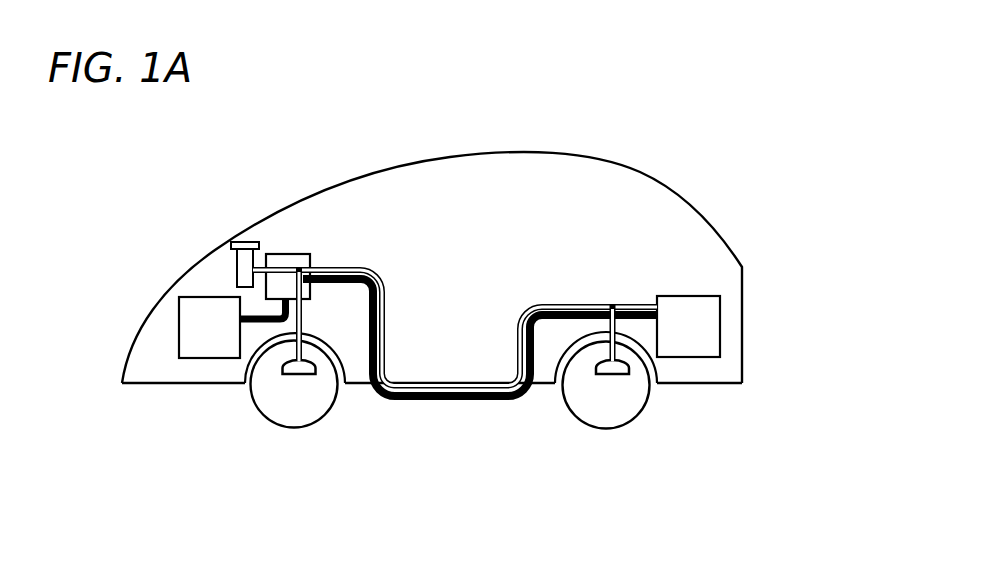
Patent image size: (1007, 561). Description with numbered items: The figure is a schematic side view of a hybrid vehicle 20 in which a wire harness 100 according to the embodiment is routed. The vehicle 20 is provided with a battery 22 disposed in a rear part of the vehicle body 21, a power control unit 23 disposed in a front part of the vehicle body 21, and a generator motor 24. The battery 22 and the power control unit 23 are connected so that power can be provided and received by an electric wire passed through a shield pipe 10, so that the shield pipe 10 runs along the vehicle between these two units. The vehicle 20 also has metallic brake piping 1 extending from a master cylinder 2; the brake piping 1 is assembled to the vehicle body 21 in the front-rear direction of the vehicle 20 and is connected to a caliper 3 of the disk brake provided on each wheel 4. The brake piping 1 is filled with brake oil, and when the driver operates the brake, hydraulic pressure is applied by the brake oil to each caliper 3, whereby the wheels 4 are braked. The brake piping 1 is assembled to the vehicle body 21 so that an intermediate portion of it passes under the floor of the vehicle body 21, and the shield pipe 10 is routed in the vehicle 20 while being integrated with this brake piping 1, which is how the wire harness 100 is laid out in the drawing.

The brake piping 1 is at (435, 383).
The master cylinder 2 is at (240, 242).
The caliper 3 is at (288, 377).
The wheel 4 is at (296, 428).
The shield pipe 10 is at (419, 402).
The hybrid vehicle 20 is at (562, 138).
The vehicle body 21 is at (677, 187).
The battery 22 is at (693, 296).
The power control unit 23 is at (289, 254).
The generator motor 24 is at (207, 297).
The wire harness 100 is at (453, 412).